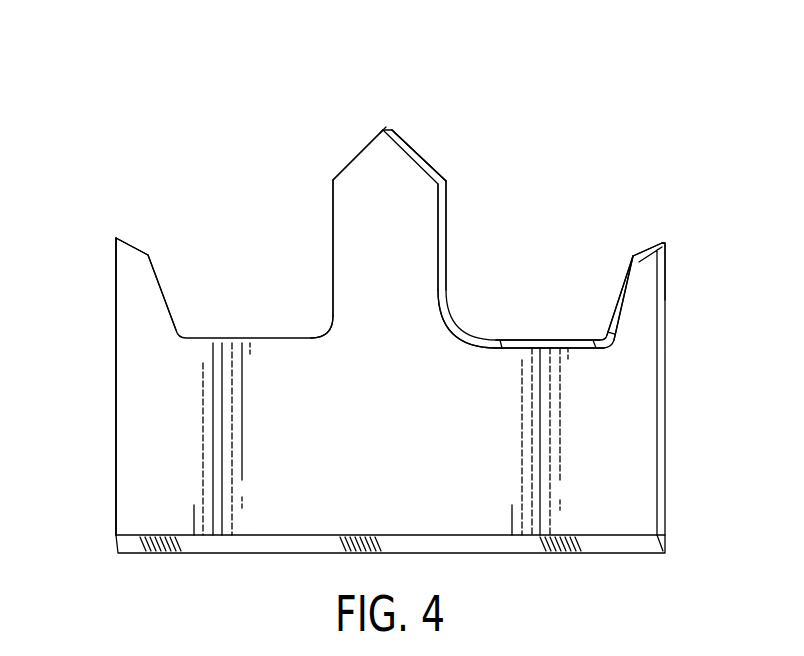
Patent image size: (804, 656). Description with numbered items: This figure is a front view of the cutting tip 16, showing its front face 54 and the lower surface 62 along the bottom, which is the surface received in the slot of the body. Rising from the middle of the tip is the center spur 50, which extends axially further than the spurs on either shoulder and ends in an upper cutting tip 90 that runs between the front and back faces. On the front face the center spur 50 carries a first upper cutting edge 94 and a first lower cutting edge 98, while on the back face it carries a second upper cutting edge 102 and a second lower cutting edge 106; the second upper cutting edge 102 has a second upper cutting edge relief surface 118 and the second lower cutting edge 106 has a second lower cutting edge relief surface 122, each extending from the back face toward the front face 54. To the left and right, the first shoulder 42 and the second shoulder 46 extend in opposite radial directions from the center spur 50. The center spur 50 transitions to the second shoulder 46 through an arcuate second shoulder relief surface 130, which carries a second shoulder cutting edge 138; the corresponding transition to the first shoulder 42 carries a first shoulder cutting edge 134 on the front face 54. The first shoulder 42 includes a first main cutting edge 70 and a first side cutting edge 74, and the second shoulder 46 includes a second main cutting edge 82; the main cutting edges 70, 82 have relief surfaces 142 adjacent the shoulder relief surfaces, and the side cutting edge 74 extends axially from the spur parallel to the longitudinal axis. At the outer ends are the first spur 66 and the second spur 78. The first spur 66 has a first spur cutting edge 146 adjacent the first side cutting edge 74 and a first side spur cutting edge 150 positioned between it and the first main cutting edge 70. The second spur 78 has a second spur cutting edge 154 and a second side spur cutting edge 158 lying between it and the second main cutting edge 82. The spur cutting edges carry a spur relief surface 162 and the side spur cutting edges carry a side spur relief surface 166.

The cutting tip 16 is at (110, 65).
The first shoulder 42 is at (238, 135).
The second shoulder 46 is at (555, 138).
The center spur 50 is at (372, 105).
The front face 54 is at (348, 438).
The lower surface 62 is at (200, 548).
The first spur 66 is at (102, 197).
The first main cutting edge 70 is at (224, 337).
The first side cutting edge 74 is at (116, 392).
The second spur 78 is at (690, 197).
The second main cutting edge 82 is at (583, 339).
The upper cutting tip 90 is at (384, 129).
The first upper cutting edge 94 is at (345, 165).
The first lower cutting edge 98 is at (332, 225).
The second upper cutting edge 102 is at (433, 168).
The second lower cutting edge 106 is at (448, 210).
The second upper cutting edge relief surface 118 is at (412, 150).
The second lower cutting edge relief surface 122 is at (446, 255).
The second shoulder relief surface 130 is at (455, 318).
The first shoulder cutting edge 134 is at (318, 320).
The second shoulder cutting edge 138 is at (478, 338).
The relief surface 142 is at (535, 345).
The first spur cutting edge 146 is at (132, 247).
The first side spur cutting edge 150 is at (162, 293).
The second spur cutting edge 154 is at (645, 245).
The second side spur cutting edge 158 is at (620, 287).
The spur relief surface 162 is at (662, 242).
The side spur relief surface 166 is at (628, 263).